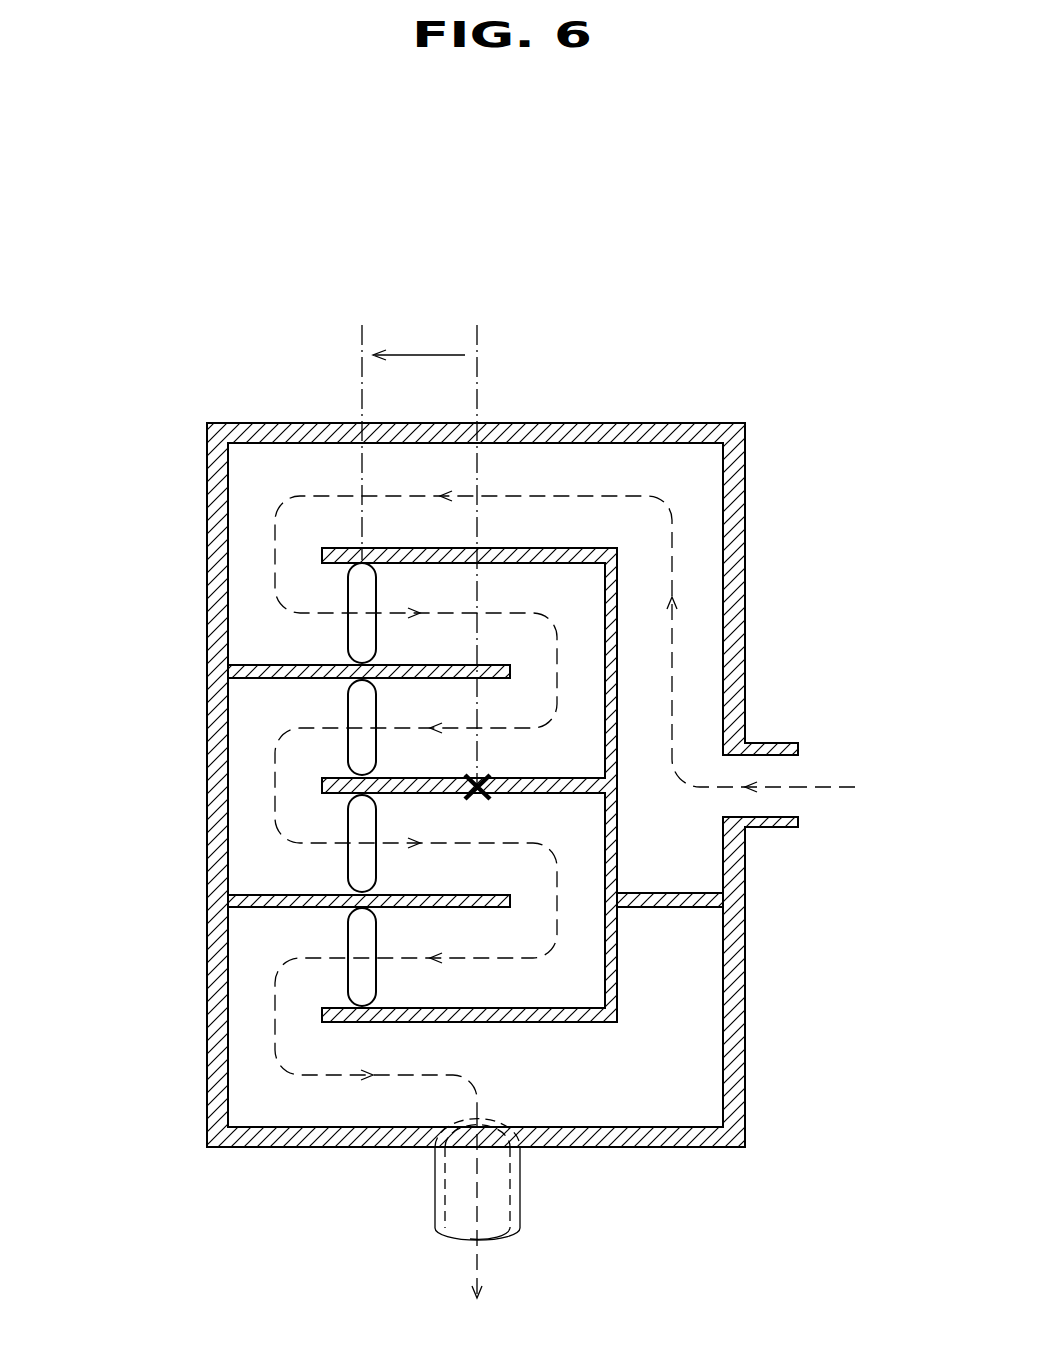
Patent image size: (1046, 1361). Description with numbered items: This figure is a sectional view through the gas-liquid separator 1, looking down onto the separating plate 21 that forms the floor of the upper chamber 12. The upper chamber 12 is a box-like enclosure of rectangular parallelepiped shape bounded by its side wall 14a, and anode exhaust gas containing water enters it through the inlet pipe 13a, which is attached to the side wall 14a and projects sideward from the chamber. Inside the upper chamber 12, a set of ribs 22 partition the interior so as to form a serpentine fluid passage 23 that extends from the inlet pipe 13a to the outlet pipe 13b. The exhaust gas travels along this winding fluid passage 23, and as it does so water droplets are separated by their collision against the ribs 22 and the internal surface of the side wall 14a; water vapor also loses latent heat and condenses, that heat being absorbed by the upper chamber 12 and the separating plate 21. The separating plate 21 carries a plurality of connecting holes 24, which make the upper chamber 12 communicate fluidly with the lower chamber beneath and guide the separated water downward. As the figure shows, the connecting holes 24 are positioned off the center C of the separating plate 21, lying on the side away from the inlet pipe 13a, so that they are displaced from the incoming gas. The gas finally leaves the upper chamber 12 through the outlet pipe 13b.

The gas-liquid separator 1 is at (578, 277).
The upper chamber 12 is at (740, 985).
The inlet pipe 13a is at (787, 830).
The outlet pipe 13b is at (435, 1195).
The side wall 14a is at (207, 500).
The separating plate 21 is at (557, 1075).
The ribs 22 is at (248, 672).
The fluid passage 23 is at (557, 495).
The connecting holes 24 is at (348, 600).
The center of the separating plate C is at (478, 787).